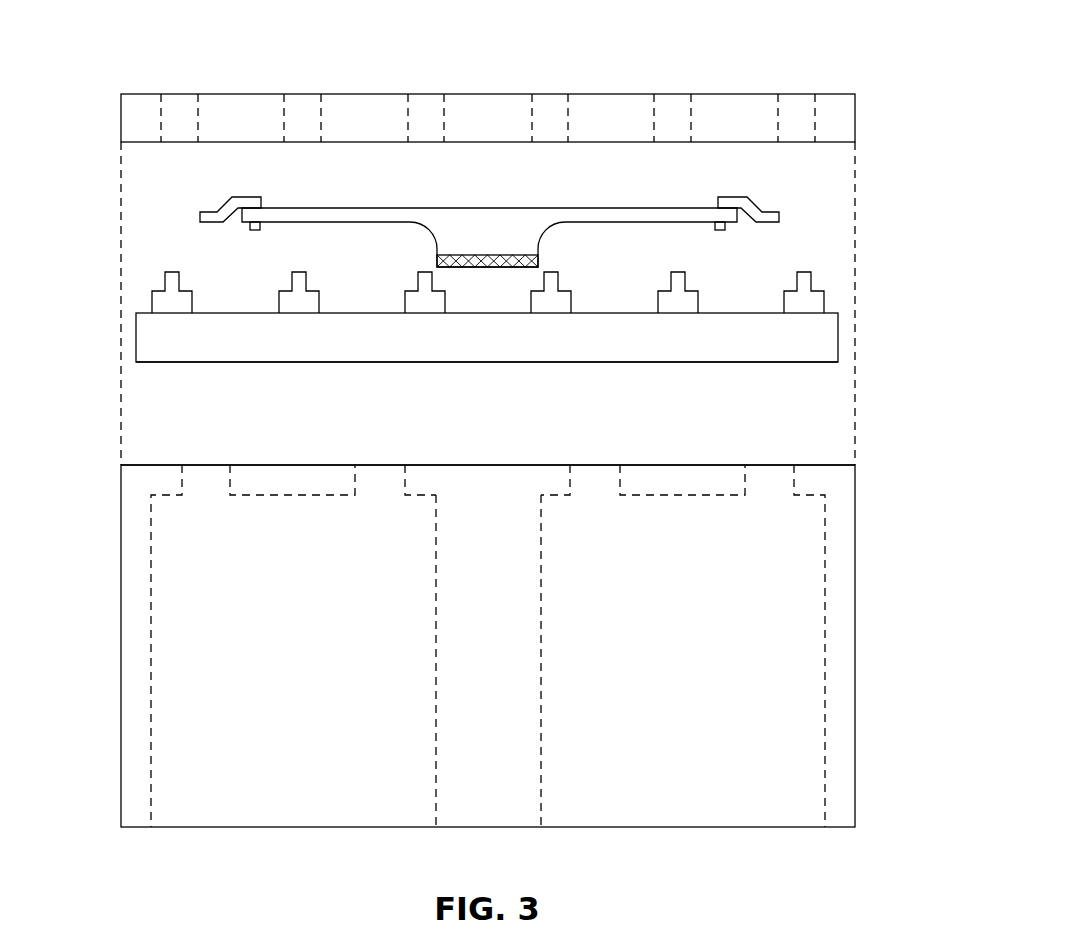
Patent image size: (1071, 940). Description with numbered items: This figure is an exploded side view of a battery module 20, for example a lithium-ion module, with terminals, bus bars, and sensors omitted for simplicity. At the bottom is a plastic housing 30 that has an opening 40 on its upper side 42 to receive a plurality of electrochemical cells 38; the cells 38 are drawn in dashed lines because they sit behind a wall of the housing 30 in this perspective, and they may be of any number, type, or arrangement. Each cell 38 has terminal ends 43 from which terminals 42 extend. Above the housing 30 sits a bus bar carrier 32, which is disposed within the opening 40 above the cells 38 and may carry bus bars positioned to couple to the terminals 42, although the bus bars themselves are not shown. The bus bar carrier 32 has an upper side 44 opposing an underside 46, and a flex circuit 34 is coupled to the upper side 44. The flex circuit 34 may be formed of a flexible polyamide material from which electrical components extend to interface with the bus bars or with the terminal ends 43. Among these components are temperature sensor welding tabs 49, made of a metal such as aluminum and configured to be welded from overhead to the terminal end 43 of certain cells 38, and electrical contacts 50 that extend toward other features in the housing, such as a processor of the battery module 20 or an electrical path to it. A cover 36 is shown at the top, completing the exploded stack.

The battery module 20 is at (112, 60).
The housing 30 is at (855, 584).
The bus bar carrier 32 is at (840, 330).
The flex circuit 34 is at (630, 208).
The cover 36 is at (737, 92).
The electrochemical cells 38 is at (437, 575).
The opening 40 is at (140, 464).
The terminals 42 is at (355, 475).
The terminal ends 43 is at (415, 493).
The upper side 44 is at (748, 312).
The underside 46 is at (795, 363).
The temperature sensor welding tabs 49 is at (210, 212).
The electrical contacts 50 is at (416, 243).